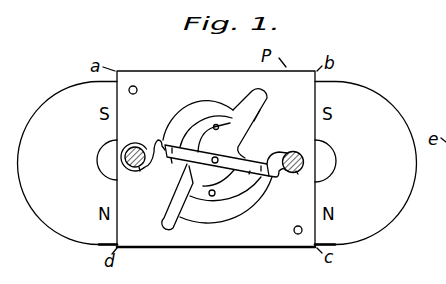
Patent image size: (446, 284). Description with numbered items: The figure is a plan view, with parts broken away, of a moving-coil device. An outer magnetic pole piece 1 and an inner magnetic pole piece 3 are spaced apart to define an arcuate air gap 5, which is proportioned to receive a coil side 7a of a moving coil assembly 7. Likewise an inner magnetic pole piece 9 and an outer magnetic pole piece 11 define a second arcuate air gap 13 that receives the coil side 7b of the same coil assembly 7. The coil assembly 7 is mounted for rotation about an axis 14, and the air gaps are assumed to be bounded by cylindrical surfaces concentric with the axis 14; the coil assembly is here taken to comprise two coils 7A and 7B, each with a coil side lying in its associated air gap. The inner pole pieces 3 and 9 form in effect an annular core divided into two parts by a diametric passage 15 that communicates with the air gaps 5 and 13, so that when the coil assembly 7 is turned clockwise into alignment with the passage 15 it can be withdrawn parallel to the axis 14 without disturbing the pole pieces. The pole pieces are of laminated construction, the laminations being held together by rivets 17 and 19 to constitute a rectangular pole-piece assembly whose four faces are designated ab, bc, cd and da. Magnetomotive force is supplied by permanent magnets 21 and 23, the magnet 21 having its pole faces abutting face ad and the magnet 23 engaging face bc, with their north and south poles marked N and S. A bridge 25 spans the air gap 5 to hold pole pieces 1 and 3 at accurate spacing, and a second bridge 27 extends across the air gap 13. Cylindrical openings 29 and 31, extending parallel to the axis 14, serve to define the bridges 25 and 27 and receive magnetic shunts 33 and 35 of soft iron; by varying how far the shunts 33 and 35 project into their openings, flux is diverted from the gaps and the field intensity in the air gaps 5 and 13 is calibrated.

The outer magnetic pole piece 1 is at (198, 97).
The inner magnetic pole piece 3 is at (230, 123).
The arcuate air gap 5 is at (235, 112).
The moving coil assembly 7 is at (226, 158).
The coil side 7a is at (158, 140).
The coil 7A is at (172, 163).
The coil side 7b is at (278, 178).
The coil 7B is at (247, 174).
The inner magnetic pole piece 9 is at (205, 195).
The outer magnetic pole piece 11 is at (226, 239).
The second arcuate air gap 13 is at (197, 213).
The axis 14 is at (212, 172).
The passage 15 is at (248, 129).
The rivet 17 is at (134, 86).
The rivet 19 is at (212, 127).
The permanent magnet 21 is at (72, 85).
The permanent magnet 23 is at (384, 96).
The bridge 25 is at (117, 160).
The second bridge 27 is at (315, 162).
The cylindrical opening 29 is at (140, 171).
The cylindrical opening 31 is at (298, 174).
The magnetic shunt 33 is at (135, 143).
The magnetic shunt 35 is at (299, 150).